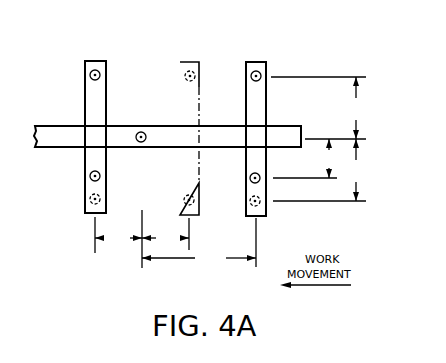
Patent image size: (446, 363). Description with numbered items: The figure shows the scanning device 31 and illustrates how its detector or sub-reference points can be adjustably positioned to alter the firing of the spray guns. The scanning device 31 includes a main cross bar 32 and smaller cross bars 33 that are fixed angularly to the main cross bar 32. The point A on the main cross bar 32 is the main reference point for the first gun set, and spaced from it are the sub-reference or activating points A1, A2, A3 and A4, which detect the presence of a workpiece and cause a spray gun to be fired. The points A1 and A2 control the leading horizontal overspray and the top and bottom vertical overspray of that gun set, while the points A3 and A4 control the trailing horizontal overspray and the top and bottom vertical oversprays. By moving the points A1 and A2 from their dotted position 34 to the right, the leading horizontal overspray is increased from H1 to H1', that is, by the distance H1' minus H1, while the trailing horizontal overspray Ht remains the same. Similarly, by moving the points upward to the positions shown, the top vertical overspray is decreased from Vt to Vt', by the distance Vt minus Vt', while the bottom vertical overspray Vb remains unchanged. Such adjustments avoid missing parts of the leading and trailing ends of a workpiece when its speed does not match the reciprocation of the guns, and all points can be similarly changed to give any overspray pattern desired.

The scanning device 31 is at (227, 43).
The main cross bar 32 is at (48, 148).
The smaller cross bar 33 is at (267, 113).
The dotted position of activating points 34 is at (201, 96).
The main reference point A is at (140, 122).
The sub-reference point A1 is at (259, 72).
The sub-reference point A2 is at (261, 181).
The sub-reference point A3 is at (89, 178).
The sub-reference point A4 is at (90, 73).
The bottom vertical overspray Vb is at (358, 108).
The top vertical overspray Vt is at (358, 170).
The adjusted top vertical overspray Vt' is at (333, 158).
The trailing horizontal overspray Ht is at (118, 241).
The leading horizontal overspray H1 is at (165, 241).
The adjusted leading horizontal overspray H1' is at (199, 260).